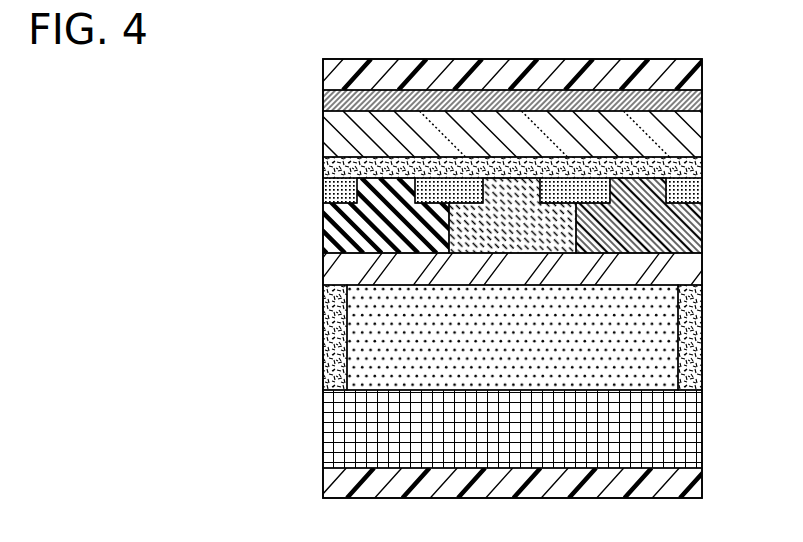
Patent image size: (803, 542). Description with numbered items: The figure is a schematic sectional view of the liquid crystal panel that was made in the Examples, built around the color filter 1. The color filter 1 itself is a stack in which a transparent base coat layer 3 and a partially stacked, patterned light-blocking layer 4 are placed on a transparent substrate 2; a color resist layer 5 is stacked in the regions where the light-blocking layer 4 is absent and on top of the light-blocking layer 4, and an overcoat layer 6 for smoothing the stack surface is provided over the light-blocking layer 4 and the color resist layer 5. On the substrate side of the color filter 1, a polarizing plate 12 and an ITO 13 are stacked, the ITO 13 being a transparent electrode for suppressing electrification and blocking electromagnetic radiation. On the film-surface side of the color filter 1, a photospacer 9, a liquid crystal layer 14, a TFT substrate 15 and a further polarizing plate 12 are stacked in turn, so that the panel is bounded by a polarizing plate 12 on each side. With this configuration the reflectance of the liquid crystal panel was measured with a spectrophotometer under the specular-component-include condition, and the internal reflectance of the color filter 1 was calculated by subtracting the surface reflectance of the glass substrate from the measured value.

The color filter 1 is at (252, 105).
The transparent substrate 2 is at (340, 136).
The transparent base coat layer 3 is at (340, 168).
The light-blocking layer 4 is at (340, 190).
The color resist layer 5 is at (340, 226).
The overcoat layer 6 is at (340, 268).
The photospacer 9 is at (323, 334).
The polarizing plate 12 is at (340, 77).
The ITO 13 is at (340, 101).
The liquid crystal layer 14 is at (400, 352).
The TFT substrate 15 is at (340, 432).